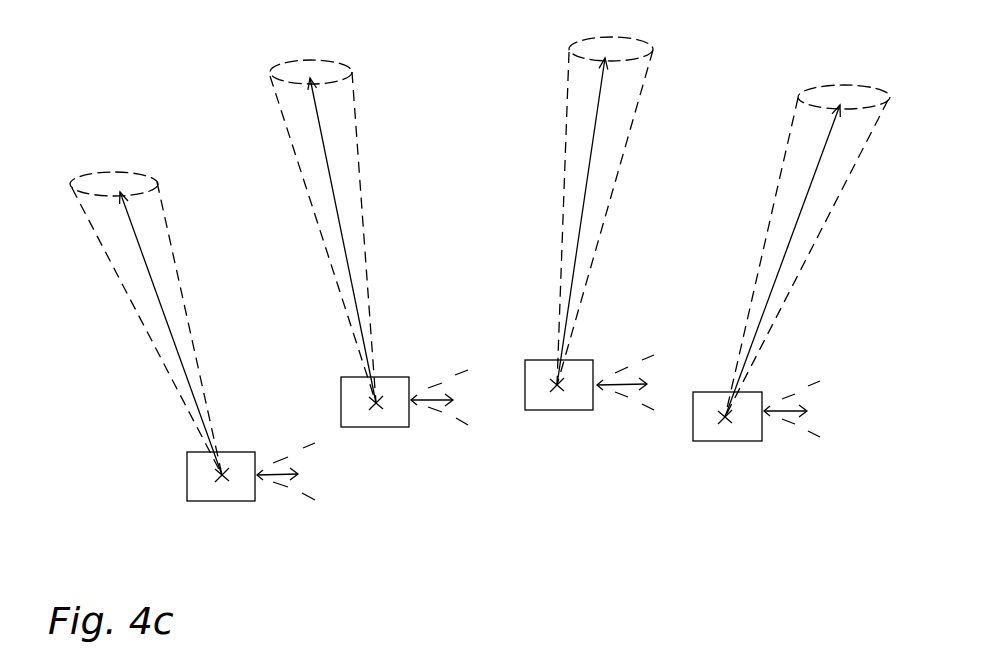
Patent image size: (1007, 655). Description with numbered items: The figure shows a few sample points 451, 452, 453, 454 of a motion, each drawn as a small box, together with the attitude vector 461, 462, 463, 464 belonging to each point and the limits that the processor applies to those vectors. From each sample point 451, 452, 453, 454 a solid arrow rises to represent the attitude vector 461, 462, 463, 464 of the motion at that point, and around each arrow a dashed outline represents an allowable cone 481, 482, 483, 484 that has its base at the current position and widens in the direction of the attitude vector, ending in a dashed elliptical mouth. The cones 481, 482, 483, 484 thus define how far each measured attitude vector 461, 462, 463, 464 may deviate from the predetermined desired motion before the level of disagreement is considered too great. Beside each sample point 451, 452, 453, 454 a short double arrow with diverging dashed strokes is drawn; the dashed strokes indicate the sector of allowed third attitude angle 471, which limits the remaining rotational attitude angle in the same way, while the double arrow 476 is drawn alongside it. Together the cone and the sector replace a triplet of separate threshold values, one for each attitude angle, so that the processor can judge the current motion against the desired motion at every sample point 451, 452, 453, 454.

The sample point 451 is at (225, 487).
The sample point 452 is at (383, 410).
The sample point 453 is at (560, 397).
The sample point 454 is at (728, 427).
The attitude vector 461 is at (180, 366).
The attitude vector 462 is at (334, 205).
The attitude vector 463 is at (582, 222).
The attitude vector 464 is at (777, 275).
The sector of allowed third attitude angle 471 is at (300, 493).
The movement direction arrow 476 is at (300, 472).
The allowable cone 481 is at (123, 176).
The allowable cone 482 is at (352, 94).
The allowable cone 483 is at (637, 111).
The allowable cone 484 is at (807, 263).